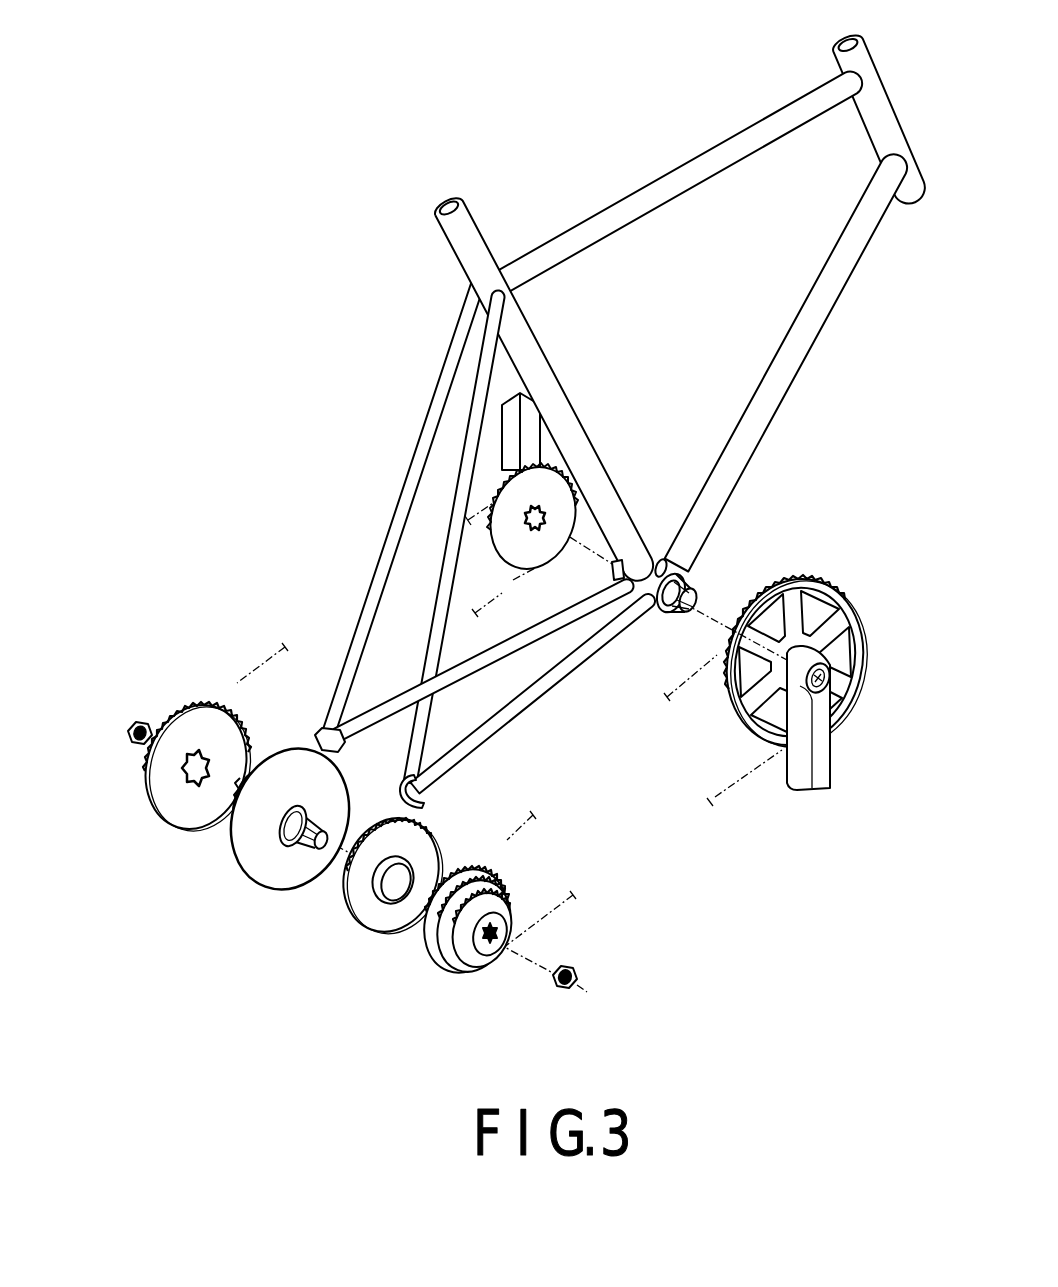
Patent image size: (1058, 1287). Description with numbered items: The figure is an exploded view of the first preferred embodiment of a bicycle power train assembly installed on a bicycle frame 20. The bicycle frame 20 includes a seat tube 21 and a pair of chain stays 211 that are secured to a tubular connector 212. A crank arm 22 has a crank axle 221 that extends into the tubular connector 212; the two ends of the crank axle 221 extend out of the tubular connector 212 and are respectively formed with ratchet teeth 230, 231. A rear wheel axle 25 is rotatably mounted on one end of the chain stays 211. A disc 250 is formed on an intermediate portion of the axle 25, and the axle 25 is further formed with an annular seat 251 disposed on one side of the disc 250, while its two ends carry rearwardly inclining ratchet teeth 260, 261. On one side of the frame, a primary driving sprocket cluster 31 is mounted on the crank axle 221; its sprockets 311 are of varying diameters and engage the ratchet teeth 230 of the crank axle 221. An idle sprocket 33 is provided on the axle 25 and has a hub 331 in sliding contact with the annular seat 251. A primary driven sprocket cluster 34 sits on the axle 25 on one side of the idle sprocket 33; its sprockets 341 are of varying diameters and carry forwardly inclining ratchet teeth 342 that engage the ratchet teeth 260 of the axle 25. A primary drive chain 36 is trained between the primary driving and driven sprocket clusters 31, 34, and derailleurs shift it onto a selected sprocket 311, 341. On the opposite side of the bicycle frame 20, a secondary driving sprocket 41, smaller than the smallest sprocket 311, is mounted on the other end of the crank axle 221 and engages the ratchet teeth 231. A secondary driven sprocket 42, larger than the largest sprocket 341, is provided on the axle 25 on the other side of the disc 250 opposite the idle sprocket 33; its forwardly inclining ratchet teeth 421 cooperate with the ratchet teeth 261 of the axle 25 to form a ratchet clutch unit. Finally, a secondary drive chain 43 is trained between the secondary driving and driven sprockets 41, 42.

The bicycle frame 20 is at (793, 398).
The seat tube 21 is at (560, 418).
The chain stays 211 is at (567, 613).
The tubular connector 212 is at (667, 563).
The crank arm 22 is at (817, 763).
The crank axle 221 is at (823, 682).
The ratchet teeth 230 is at (665, 617).
The ratchet teeth 231 is at (616, 570).
The rear wheel axle 25 is at (320, 842).
The disc 250 is at (252, 868).
The annular seat 251 is at (288, 845).
The ratchet teeth 260 is at (302, 850).
The ratchet teeth 261 is at (238, 812).
The primary driving sprocket cluster 31 is at (857, 597).
The sprockets 311 is at (828, 583).
The idle sprocket 33 is at (363, 917).
The hub 331 is at (397, 907).
The primary driven sprocket cluster 34 is at (517, 890).
The sprockets 341 is at (493, 873).
The ratchet teeth 342 is at (497, 947).
The primary drive chain 36 is at (730, 793).
The secondary driving sprocket 41 is at (501, 528).
The secondary driven sprocket 42 is at (198, 723).
The ratchet teeth 421 is at (200, 795).
The secondary drive chain 43 is at (255, 667).